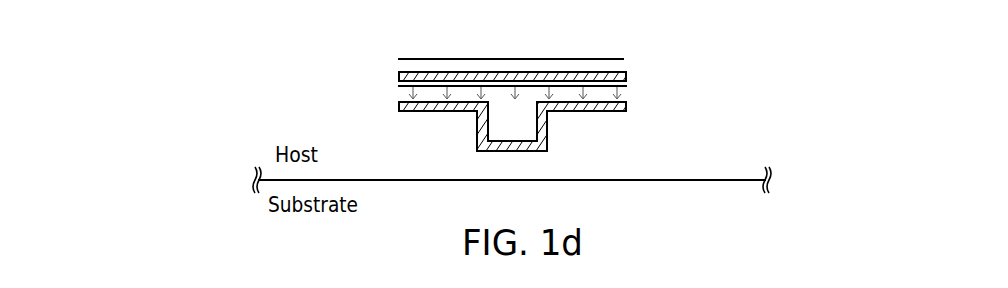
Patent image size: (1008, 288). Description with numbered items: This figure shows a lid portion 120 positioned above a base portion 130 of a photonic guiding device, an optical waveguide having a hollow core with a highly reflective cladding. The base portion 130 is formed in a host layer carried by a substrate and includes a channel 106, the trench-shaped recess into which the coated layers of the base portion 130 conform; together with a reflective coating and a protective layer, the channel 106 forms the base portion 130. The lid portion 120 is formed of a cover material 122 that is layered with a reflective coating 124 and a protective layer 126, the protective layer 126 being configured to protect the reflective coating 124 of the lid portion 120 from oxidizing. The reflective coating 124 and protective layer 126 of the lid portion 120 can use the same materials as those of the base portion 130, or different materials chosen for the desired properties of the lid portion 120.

The channel 106 is at (521, 126).
The lid portion 120 is at (521, 63).
The cover material 122 is at (622, 58).
The reflective coating 124 is at (626, 68).
The protective layer 126 is at (627, 86).
The base portion 130 is at (395, 100).